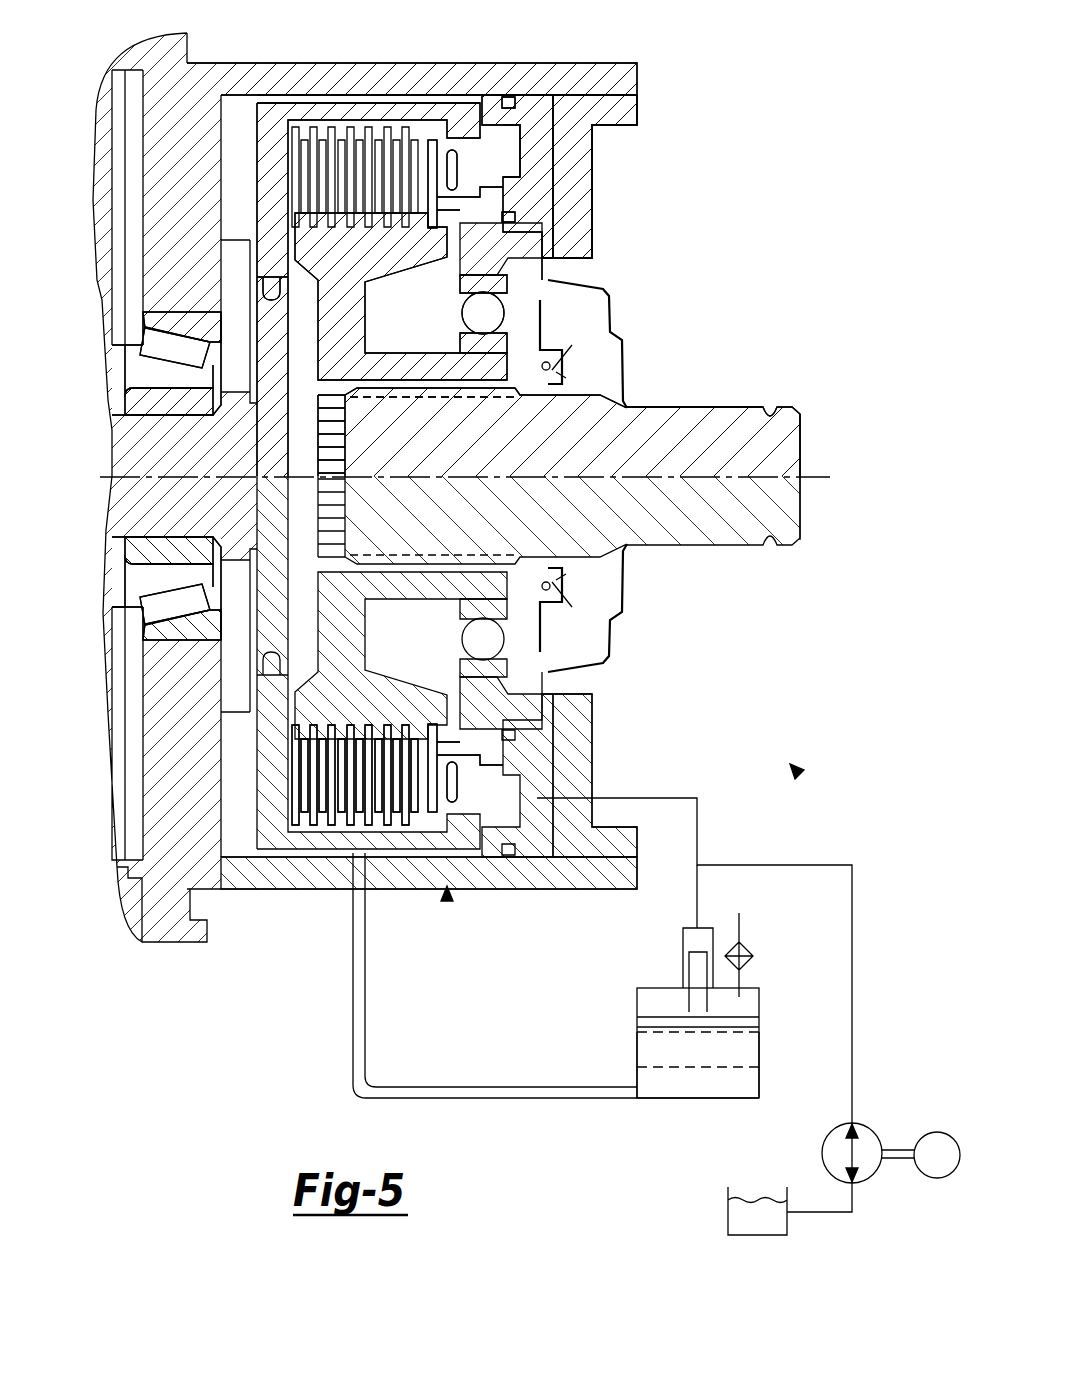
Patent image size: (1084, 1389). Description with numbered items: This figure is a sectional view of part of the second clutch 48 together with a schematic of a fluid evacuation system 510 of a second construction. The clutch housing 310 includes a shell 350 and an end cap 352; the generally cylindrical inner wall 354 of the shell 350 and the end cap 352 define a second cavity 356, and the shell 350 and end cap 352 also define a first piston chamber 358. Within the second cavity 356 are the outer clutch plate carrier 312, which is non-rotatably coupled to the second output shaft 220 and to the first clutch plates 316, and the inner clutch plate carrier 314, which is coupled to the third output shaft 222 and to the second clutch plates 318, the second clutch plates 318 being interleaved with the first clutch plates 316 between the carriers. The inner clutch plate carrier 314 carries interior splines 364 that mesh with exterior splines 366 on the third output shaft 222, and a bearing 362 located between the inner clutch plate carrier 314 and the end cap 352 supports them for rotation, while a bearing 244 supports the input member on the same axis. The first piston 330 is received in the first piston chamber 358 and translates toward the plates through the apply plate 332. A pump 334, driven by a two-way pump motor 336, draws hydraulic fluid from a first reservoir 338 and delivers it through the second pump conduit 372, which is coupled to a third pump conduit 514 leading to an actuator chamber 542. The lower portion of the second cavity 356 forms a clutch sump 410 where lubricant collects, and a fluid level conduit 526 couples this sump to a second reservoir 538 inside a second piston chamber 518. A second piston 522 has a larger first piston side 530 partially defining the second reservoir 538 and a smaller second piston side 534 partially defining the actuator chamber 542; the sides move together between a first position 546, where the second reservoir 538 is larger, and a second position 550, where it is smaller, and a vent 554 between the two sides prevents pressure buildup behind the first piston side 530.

The second clutch 48 is at (447, 897).
The second output shaft 220 is at (130, 514).
The third output shaft 222 is at (742, 522).
The bearing 244 is at (173, 342).
The clutch housing 310 is at (290, 890).
The outer clutch plate carrier 312 is at (262, 192).
The inner clutch plate carrier 314 is at (347, 323).
The first clutch plates 316 is at (385, 800).
The second clutch plates 318 is at (405, 762).
The first piston 330 is at (515, 205).
The apply plate 332 is at (433, 208).
The pump 334 is at (832, 1127).
The pump motor 336 is at (935, 1131).
The first reservoir 338 is at (728, 1212).
The shell 350 is at (614, 74).
The end cap 352 is at (588, 140).
The inner wall 354 is at (325, 97).
The second cavity 356 is at (348, 98).
The first piston chamber 358 is at (513, 145).
The bearing 362 is at (485, 313).
The interior splines 364 is at (335, 527).
The exterior splines 366 is at (413, 395).
The second pump conduit 372 is at (670, 798).
The clutch sump 410 is at (232, 812).
The fluid evacuation system 510 is at (799, 770).
The third pump conduit 514 is at (698, 893).
The second piston chamber 518 is at (760, 1087).
The second piston 522 is at (693, 1012).
The fluid level conduit 526 is at (482, 1100).
The first piston side 530 is at (648, 1023).
The second piston side 534 is at (695, 967).
The second reservoir 538 is at (657, 1100).
The actuator chamber 542 is at (695, 940).
The first position 546 is at (705, 1032).
The second position 550 is at (662, 1067).
The vent 554 is at (753, 956).